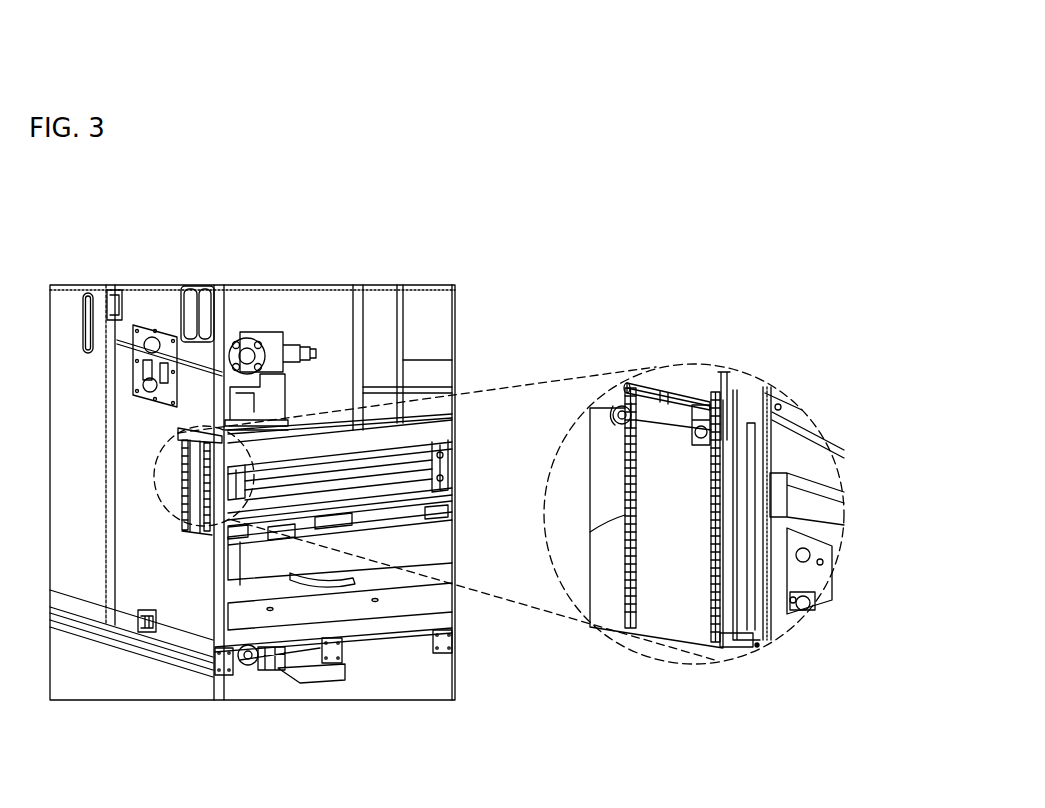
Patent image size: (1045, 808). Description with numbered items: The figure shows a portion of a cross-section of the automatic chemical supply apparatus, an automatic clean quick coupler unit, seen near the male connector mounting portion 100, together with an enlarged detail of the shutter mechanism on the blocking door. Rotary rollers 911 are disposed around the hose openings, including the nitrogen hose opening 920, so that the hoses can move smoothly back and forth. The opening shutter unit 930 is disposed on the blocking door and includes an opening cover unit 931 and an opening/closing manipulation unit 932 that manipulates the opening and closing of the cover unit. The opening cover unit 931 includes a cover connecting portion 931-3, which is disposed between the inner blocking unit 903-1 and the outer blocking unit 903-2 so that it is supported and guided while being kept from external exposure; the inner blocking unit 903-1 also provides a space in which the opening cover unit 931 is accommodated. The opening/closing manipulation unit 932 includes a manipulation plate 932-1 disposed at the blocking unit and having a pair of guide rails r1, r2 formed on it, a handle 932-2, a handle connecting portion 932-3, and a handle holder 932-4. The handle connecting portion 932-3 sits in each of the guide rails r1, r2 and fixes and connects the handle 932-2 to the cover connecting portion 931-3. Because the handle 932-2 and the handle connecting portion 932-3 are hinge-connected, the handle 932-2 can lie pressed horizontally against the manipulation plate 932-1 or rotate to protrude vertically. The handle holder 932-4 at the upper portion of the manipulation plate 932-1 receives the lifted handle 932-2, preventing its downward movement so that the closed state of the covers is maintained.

The male connector mounting portion 100 is at (291, 396).
The rotary rollers 911 is at (152, 326).
The nitrogen hose opening 920 is at (158, 336).
The opening shutter unit 930 is at (158, 374).
The opening cover unit 931 is at (742, 566).
The cover connecting portion 931-3 is at (861, 611).
The opening/closing manipulation unit 932 is at (648, 636).
The manipulation plate 932-1 is at (667, 605).
The handle 932-2 is at (612, 405).
The handle connecting portion 932-3 is at (745, 424).
The handle holder 932-4 is at (650, 403).
The inner blocking unit 903-1 is at (740, 388).
The outer blocking unit 903-2 is at (690, 382).
The guide rail r1 is at (590, 532).
The guide rail r2 is at (758, 647).